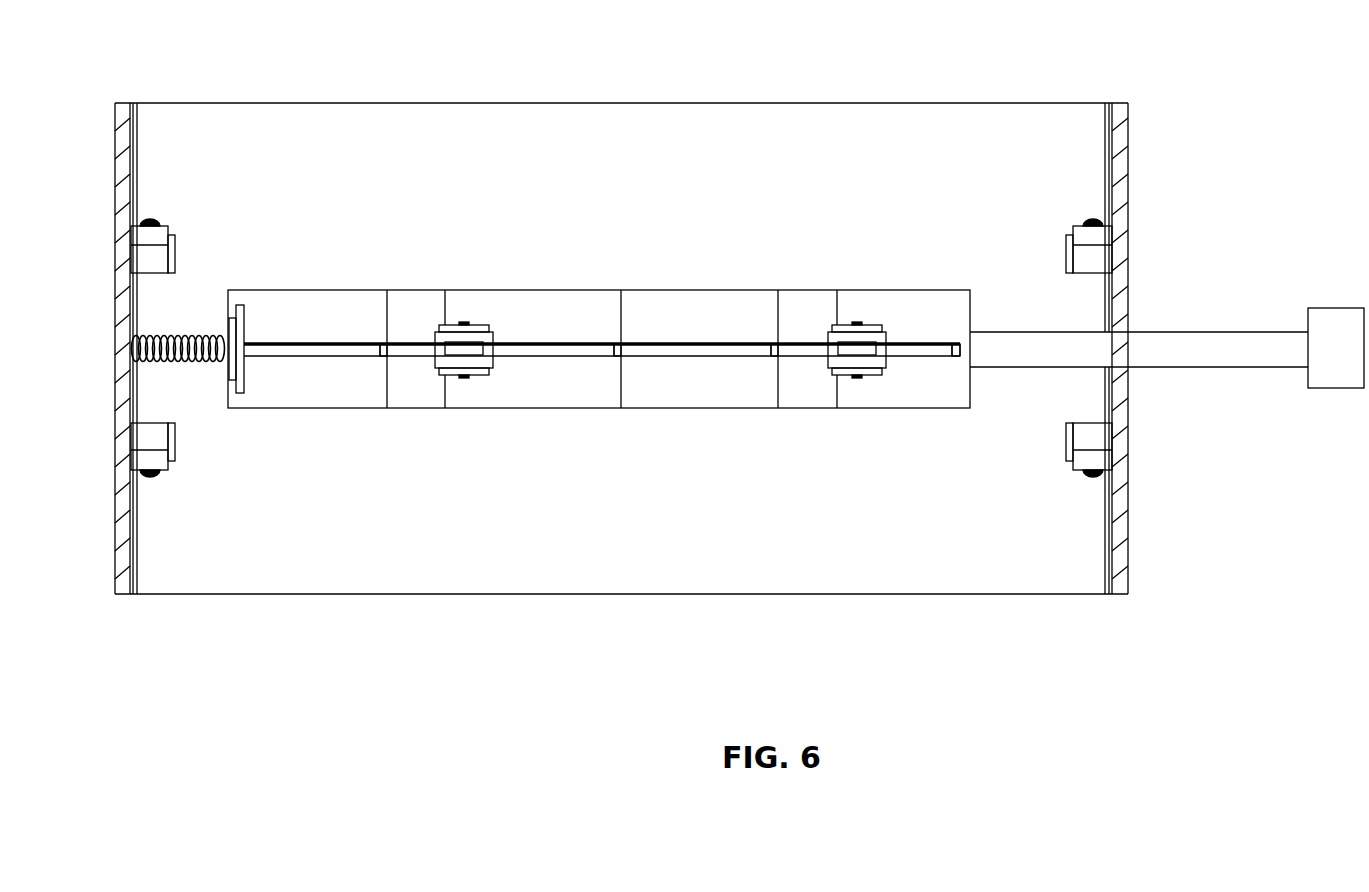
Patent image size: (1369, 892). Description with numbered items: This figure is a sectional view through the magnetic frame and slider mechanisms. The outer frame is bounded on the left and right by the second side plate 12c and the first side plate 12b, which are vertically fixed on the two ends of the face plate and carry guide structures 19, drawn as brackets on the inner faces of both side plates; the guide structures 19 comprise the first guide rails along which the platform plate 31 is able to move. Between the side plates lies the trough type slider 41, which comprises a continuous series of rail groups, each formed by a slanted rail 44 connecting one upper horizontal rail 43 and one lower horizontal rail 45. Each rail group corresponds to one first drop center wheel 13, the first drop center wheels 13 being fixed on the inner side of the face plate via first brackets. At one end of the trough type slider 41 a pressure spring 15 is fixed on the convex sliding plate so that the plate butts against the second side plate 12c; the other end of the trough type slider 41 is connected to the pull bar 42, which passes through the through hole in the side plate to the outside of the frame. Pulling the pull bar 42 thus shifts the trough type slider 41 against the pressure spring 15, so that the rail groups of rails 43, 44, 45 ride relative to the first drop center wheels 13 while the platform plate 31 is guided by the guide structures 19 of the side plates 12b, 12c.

The first side plate 12b is at (1120, 185).
The second side plate 12c is at (128, 170).
The first drop center wheel 13 is at (470, 360).
The pressure spring 15 is at (131, 349).
The guide structure 19 is at (207, 197).
The platform plate 31 is at (593, 542).
The trough type slider 41 is at (338, 382).
The pull bar 42 is at (1205, 355).
The upper horizontal rail 43 is at (550, 348).
The slanted rail 44 is at (410, 348).
The lower horizontal rail 45 is at (319, 348).